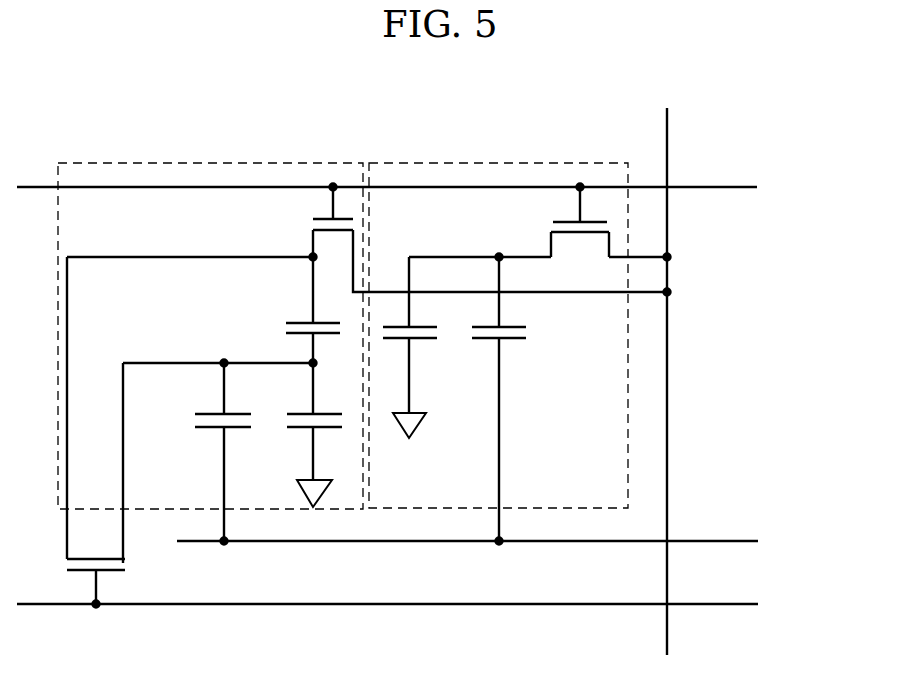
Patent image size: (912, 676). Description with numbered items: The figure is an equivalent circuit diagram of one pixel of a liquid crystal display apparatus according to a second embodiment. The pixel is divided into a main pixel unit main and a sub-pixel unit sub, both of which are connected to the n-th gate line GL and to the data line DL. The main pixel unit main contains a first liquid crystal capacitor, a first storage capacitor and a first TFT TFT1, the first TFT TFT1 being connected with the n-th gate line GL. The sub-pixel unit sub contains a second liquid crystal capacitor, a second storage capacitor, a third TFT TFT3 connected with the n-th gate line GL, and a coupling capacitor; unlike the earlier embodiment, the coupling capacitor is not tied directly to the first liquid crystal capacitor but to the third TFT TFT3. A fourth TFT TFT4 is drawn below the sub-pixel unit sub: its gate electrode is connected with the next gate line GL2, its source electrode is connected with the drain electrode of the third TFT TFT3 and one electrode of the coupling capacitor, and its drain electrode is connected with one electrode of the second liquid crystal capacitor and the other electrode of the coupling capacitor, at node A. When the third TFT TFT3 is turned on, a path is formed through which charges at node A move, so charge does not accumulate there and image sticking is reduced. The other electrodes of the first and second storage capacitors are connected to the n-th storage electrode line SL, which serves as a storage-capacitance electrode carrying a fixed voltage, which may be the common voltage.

The sub-pixel unit sub is at (210, 324).
The main pixel unit main is at (498, 324).
The n-th gate line GL is at (418, 177).
The (n+1)-th gate line GL2 is at (432, 593).
The data line DL is at (669, 367).
The n-th storage electrode line SL is at (496, 531).
The first TFT TFT1 is at (538, 224).
The third TFT TFT3 is at (367, 373).
The fourth TFT TFT4 is at (125, 580).
The node A is at (229, 455).